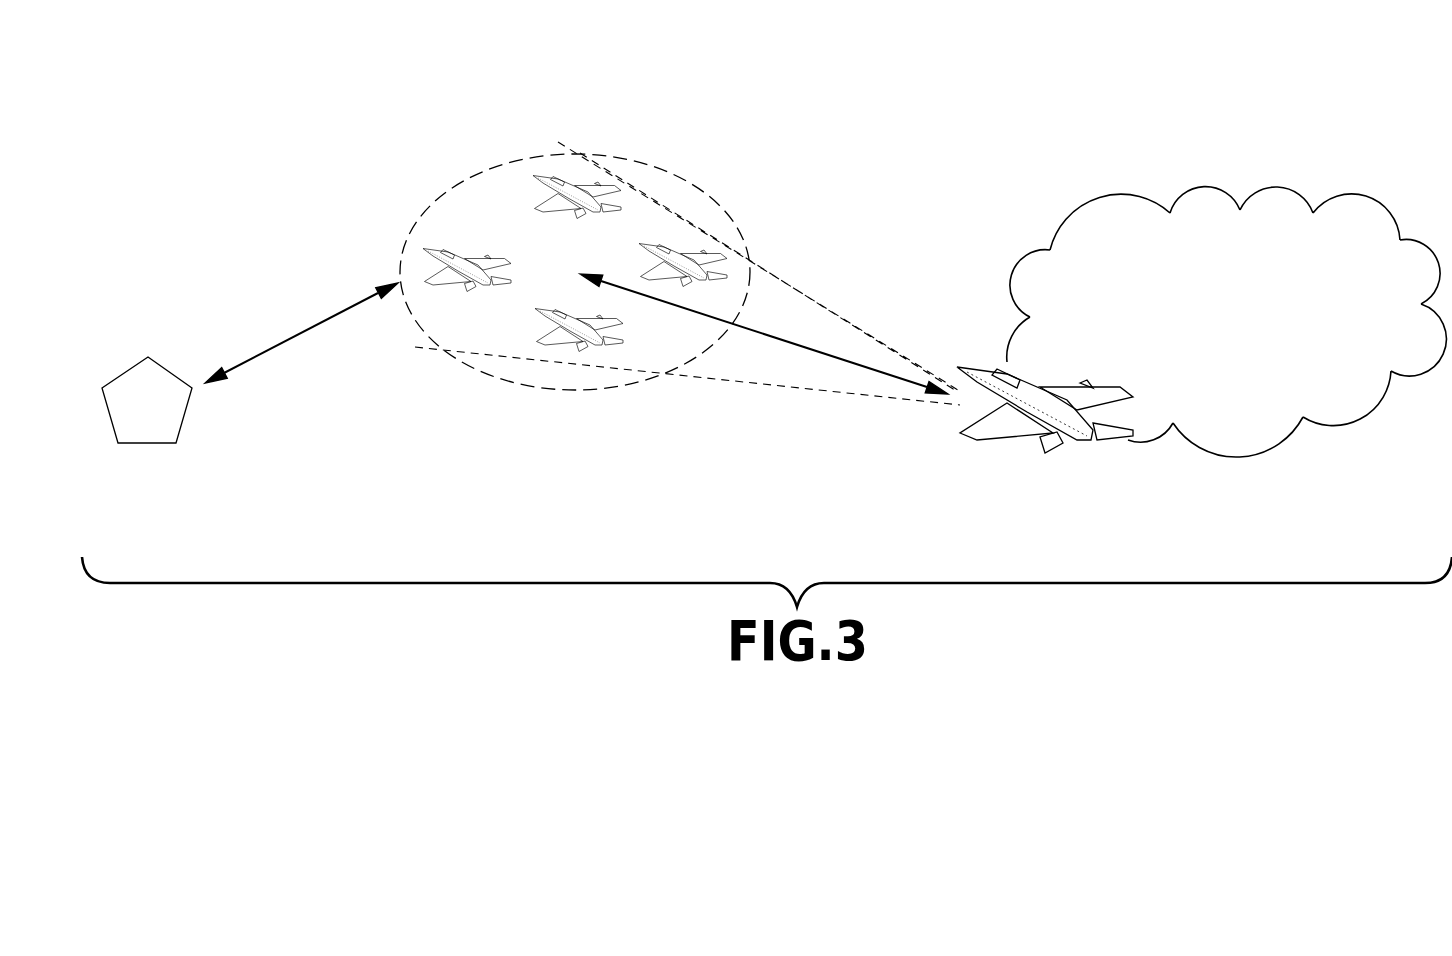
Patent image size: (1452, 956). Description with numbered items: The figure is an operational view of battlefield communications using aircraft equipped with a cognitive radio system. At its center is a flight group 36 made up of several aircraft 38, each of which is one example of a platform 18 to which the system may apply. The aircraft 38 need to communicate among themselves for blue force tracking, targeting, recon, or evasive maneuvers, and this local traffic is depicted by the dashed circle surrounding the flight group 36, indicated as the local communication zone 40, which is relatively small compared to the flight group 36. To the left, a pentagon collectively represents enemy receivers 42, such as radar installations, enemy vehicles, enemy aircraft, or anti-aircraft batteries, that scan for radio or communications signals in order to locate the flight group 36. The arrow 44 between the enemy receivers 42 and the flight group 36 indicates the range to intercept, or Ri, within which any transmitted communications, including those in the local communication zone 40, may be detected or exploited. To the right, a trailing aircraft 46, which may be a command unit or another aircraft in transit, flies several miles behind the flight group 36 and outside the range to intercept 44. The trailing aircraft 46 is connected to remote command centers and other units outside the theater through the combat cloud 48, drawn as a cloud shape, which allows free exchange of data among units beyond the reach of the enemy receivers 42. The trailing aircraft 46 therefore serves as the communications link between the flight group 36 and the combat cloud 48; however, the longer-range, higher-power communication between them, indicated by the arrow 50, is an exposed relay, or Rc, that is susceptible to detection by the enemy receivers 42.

The platform 18 is at (579, 266).
The aircraft 38 is at (553, 178).
The flight group 36 is at (579, 266).
The local communication zone 40 is at (680, 165).
The enemy receivers 42 is at (165, 418).
The range to intercept (Ri) 44 is at (302, 330).
The trailing aircraft 46 is at (1010, 440).
The combat cloud 48 is at (1245, 335).
The exposed relay (Rc) 50 is at (780, 337).